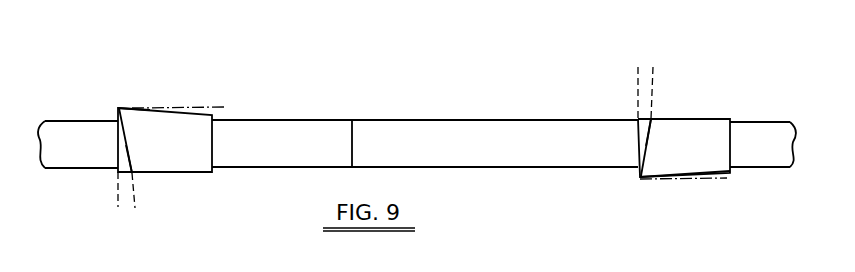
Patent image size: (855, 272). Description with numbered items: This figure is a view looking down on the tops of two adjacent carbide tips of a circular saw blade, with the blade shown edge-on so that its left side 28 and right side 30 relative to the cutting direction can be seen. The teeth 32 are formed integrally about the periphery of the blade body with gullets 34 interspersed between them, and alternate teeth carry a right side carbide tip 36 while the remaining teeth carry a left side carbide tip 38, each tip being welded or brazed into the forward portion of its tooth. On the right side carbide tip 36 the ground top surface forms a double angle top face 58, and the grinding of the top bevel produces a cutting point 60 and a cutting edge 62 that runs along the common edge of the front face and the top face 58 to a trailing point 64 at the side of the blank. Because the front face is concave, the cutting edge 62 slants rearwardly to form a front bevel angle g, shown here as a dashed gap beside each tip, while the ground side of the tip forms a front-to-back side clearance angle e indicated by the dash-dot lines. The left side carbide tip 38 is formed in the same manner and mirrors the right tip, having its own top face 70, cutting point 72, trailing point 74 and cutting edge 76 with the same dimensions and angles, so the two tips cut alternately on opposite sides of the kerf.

The left side 28 is at (491, 170).
The right side 30 is at (450, 120).
The teeth 32 is at (310, 133).
The gullets 34 is at (570, 120).
The right side carbide tip 36 is at (200, 175).
The left side carbide tip 38 is at (732, 115).
The double angle top face 58 is at (173, 152).
The cutting point 60 is at (118, 108).
The cutting edge 62 is at (125, 148).
The trailing point 64 is at (130, 174).
The top face 70 is at (694, 132).
The cutting point 72 is at (641, 178).
The trailing point 74 is at (652, 116).
The cutting edge 76 is at (638, 138).
The front-to-back side clearance angle e is at (195, 107).
The front bevel angle g is at (385, 138).